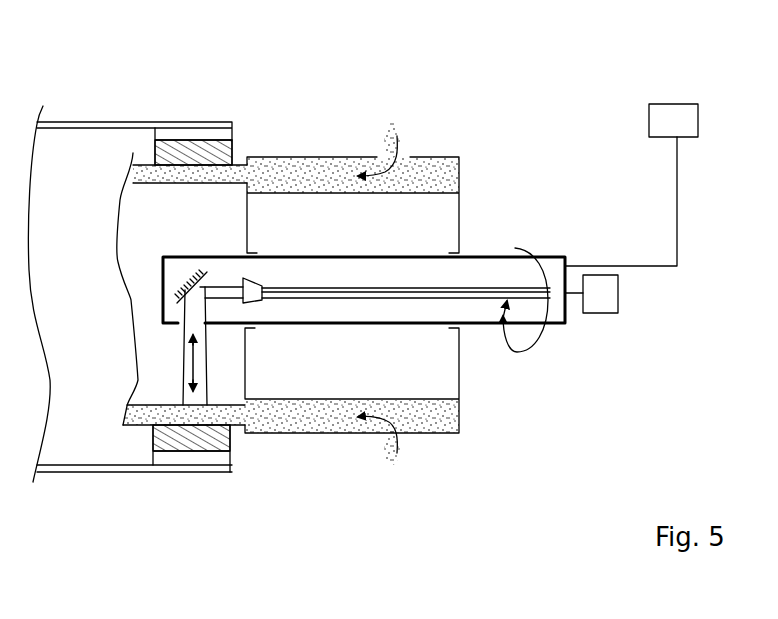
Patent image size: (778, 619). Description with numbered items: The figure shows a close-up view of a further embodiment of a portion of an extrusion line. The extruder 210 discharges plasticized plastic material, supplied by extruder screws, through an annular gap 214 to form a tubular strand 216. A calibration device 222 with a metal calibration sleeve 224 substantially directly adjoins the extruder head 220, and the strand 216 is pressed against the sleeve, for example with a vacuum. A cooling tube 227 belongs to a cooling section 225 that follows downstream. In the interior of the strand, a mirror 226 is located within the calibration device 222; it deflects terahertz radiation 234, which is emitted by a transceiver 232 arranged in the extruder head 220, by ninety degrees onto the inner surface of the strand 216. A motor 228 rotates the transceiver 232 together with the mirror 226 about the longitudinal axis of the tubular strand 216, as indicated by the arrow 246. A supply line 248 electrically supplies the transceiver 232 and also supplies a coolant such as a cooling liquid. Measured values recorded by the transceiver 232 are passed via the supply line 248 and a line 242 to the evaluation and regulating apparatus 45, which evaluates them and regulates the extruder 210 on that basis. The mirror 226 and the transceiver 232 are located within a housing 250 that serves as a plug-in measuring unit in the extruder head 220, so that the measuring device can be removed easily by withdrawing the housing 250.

The extruder 210 is at (442, 128).
The annular gap 214 is at (247, 417).
The tubular strand 216 is at (142, 168).
The extruder head 220 is at (268, 170).
The calibration device 222 is at (177, 133).
The metal calibration sleeve 224 is at (202, 153).
The cooling section 225 is at (103, 505).
The mirror 226 is at (194, 280).
The cooling tube 227 is at (43, 118).
The motor 228 is at (618, 303).
The transceiver 232 is at (250, 285).
The terahertz radiation 234 is at (185, 367).
The line 242 is at (677, 212).
The arrow 246 is at (540, 238).
The supply line 248 is at (487, 290).
The housing 250 is at (482, 327).
The evaluation and regulating apparatus 45 is at (673, 120).